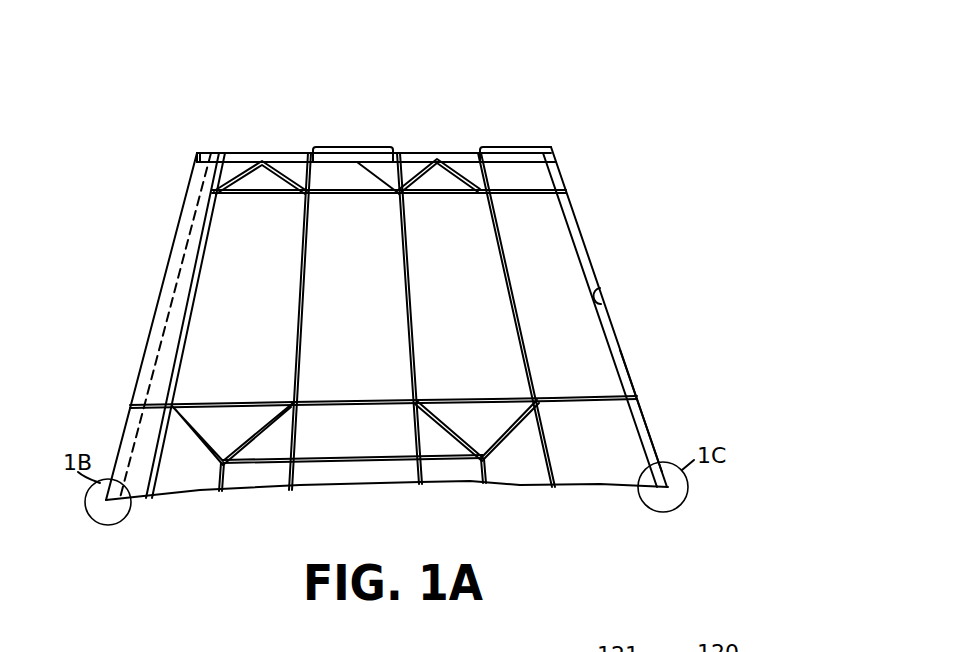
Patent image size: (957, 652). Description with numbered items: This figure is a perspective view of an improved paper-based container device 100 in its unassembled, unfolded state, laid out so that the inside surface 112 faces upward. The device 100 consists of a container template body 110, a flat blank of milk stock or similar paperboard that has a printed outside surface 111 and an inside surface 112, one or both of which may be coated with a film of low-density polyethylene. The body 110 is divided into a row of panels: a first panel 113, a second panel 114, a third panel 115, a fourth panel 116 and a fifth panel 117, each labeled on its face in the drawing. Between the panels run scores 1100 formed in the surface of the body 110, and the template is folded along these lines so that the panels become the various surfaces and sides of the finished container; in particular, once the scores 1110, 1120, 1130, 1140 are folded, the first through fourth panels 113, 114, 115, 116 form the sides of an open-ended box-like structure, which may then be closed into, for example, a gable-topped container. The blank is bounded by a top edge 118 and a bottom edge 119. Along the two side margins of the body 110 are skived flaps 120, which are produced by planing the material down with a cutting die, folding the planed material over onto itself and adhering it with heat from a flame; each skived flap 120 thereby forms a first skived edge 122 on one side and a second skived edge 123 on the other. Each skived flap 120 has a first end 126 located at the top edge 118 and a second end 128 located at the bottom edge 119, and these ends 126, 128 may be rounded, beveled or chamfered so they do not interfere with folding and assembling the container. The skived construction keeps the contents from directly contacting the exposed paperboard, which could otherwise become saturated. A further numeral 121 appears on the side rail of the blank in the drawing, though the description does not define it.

The paper-based container device 100 is at (645, 100).
The container template body 110 is at (435, 136).
The printed outside surface 111 is at (140, 503).
The inside surface 112 is at (237, 237).
The first panel 113 is at (575, 291).
The second panel 114 is at (479, 291).
The third panel 115 is at (382, 291).
The fourth panel 116 is at (272, 291).
The fifth panel 117 is at (192, 250).
The top edge 118 is at (373, 147).
The bottom edge 119 is at (473, 483).
The skived flap 120 is at (618, 350).
The inner rail edge 121 is at (597, 283).
The first skived edge 122 is at (142, 348).
The second skived edge 123 is at (635, 380).
The first end 126 is at (210, 140).
The second end 128 is at (105, 515).
The scores 1100 is at (303, 233).
The score 1110 is at (192, 308).
The score 1120 is at (262, 158).
The score 1130 is at (400, 230).
The score 1140 is at (507, 260).